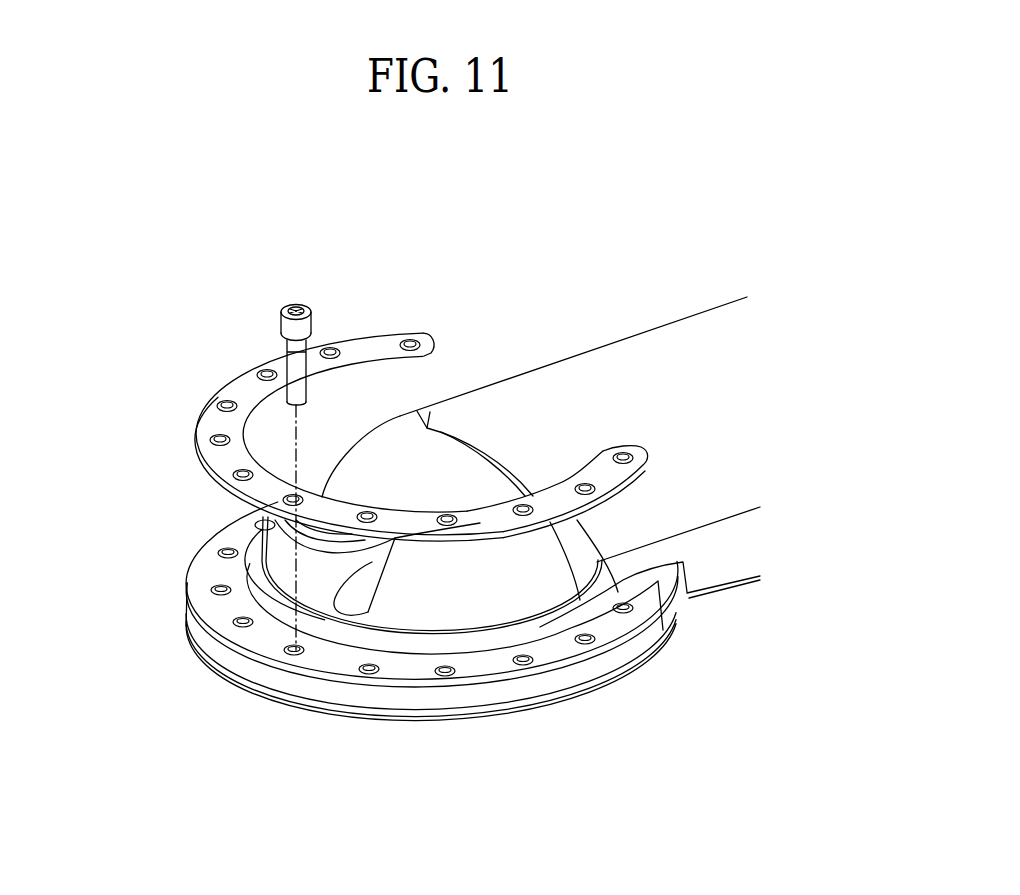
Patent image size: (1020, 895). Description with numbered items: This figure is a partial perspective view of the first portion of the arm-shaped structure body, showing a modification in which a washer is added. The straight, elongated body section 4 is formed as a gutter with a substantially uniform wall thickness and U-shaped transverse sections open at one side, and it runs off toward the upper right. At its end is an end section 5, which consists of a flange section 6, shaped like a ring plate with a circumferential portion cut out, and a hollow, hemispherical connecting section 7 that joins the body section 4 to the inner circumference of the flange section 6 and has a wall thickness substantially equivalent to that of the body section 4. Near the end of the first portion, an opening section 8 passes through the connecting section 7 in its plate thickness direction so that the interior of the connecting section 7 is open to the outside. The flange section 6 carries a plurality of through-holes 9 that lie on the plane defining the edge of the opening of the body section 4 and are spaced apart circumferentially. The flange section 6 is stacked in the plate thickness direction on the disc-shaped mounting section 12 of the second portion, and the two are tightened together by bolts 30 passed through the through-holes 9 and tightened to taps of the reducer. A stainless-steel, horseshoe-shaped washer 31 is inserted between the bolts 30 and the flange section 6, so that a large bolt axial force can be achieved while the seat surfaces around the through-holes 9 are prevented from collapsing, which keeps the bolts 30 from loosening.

The body section 4 is at (621, 372).
The end section 5 is at (340, 412).
The flange section 6 is at (568, 683).
The connecting section 7 is at (391, 452).
The opening section 8 is at (373, 565).
The through-hole 9 is at (452, 665).
The mounting section 12 is at (338, 728).
The bolt 30 is at (294, 306).
The washer 31 is at (218, 425).